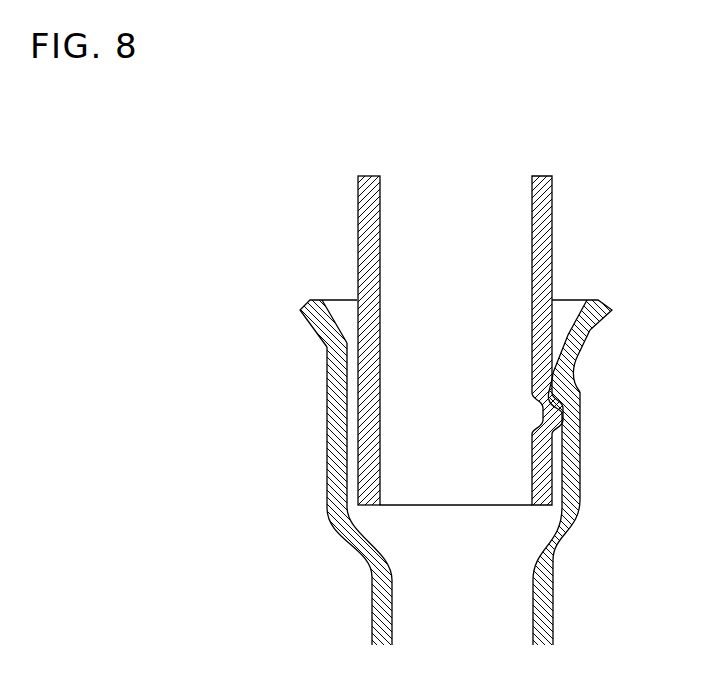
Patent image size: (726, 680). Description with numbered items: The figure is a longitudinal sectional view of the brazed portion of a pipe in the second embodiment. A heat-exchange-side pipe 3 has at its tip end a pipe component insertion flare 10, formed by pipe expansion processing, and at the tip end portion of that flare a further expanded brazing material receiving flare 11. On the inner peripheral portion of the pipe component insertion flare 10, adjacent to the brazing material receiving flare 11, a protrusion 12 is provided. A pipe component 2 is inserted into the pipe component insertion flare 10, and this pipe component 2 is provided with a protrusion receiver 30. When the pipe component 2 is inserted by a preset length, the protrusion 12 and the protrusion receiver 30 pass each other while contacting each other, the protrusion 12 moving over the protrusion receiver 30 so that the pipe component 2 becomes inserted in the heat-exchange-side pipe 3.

The pipe component 2 is at (553, 217).
The heat-exchange-side pipe 3 is at (554, 587).
The pipe component insertion flare 10 is at (578, 478).
The brazing material receiving flare 11 is at (613, 310).
The protrusion 12 is at (575, 367).
The protrusion receiver 30 is at (561, 415).